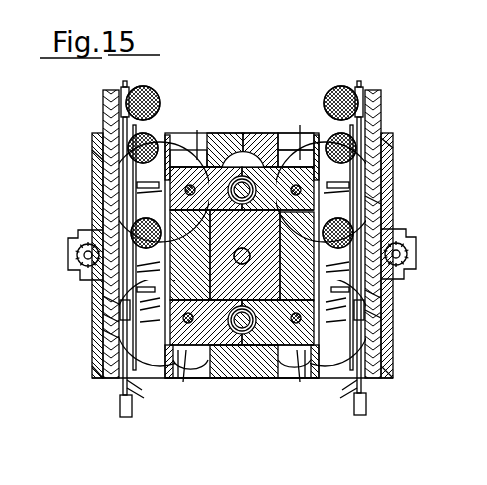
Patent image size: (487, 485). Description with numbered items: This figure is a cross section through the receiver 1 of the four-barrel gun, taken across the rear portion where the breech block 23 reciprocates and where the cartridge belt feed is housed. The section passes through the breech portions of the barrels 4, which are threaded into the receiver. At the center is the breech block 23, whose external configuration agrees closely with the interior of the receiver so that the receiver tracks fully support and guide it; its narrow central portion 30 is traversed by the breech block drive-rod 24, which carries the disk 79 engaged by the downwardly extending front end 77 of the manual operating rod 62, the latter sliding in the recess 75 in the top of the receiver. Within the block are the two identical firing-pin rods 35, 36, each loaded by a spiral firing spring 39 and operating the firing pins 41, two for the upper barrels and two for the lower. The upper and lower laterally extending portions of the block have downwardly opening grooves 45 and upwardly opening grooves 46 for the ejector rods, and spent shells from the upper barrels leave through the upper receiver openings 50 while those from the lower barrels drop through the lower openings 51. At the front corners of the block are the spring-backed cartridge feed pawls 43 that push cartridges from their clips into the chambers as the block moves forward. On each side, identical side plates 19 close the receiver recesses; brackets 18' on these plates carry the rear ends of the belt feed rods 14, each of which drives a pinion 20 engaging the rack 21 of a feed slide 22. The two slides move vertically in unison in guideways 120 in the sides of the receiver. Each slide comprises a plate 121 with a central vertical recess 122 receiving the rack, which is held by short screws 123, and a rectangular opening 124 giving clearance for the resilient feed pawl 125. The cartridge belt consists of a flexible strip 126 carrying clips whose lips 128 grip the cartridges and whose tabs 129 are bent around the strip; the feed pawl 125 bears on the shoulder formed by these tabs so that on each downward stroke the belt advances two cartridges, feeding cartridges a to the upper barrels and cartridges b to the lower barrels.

The receiver 1 is at (244, 378).
The barrels 4 is at (242, 253).
The belt feed rods 14 is at (76, 257).
The brackets 18' is at (247, 238).
The side plates 19 is at (95, 377).
The pinion 20 is at (70, 272).
The racks 21 is at (104, 202).
The feed slides 22 is at (104, 318).
The breech block 23 is at (296, 142).
The breech block drive-rod 24 is at (245, 255).
The narrow central portion 30 is at (212, 258).
The firing-pin rod 35 is at (278, 188).
The firing-pin rod 36 is at (258, 322).
The spiral firing spring 39 is at (224, 272).
The firing pins 41 is at (242, 242).
The cartridge feed pawls 43 is at (121, 186).
The downwardly opening grooves 45 is at (243, 192).
The upwardly opening grooves 46 is at (242, 322).
The upper receiver openings 50 is at (242, 241).
The lower openings 51 is at (223, 362).
The manual operating rod 62 is at (238, 135).
The recess 75 is at (222, 134).
The downwardly extending front end 77 is at (256, 236).
The disk 79 is at (238, 248).
The guideways 120 is at (104, 300).
The plate 121 is at (104, 332).
The central vertical recess 122 is at (406, 100).
The short screws 123 is at (104, 116).
The rectangular opening 124 is at (93, 137).
The resilient feed pawl 125 is at (96, 156).
The strip 126 is at (126, 84).
The lips 128 is at (150, 88).
The tabs 129 is at (117, 92).
The cartridges a is at (158, 98).
The cartridges b is at (150, 135).